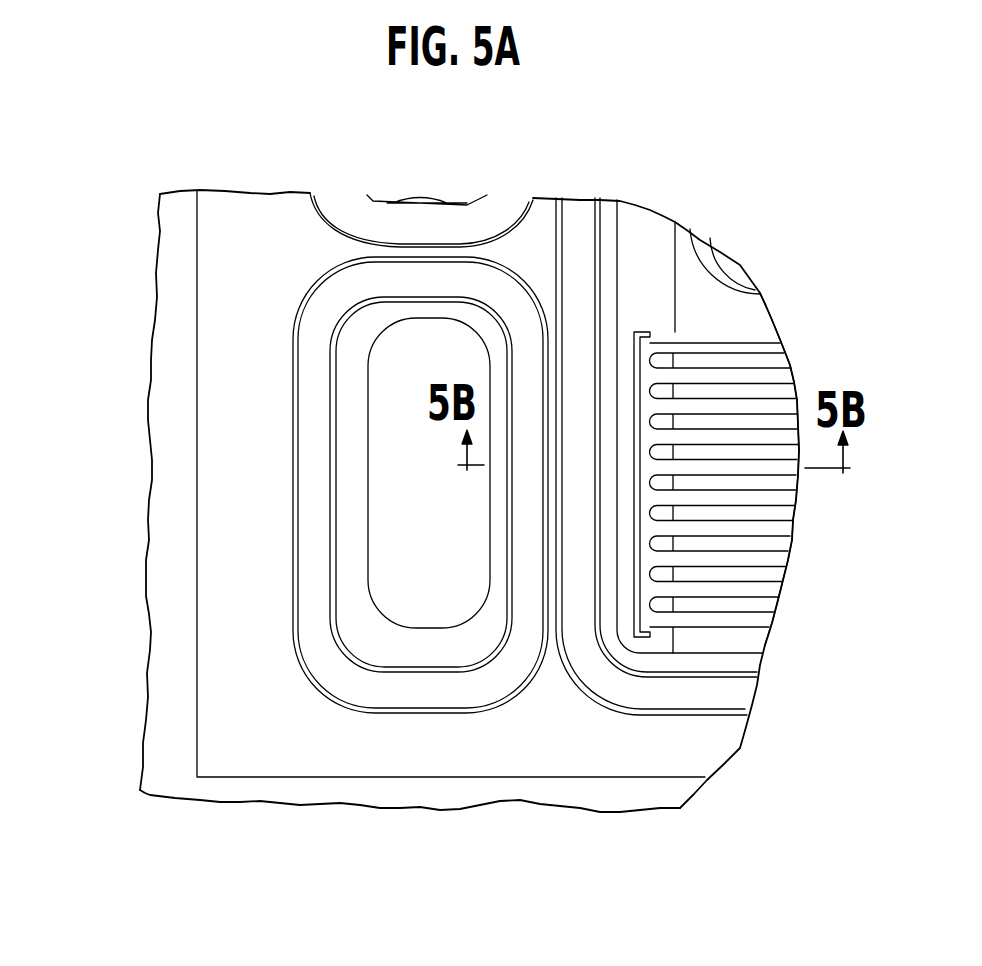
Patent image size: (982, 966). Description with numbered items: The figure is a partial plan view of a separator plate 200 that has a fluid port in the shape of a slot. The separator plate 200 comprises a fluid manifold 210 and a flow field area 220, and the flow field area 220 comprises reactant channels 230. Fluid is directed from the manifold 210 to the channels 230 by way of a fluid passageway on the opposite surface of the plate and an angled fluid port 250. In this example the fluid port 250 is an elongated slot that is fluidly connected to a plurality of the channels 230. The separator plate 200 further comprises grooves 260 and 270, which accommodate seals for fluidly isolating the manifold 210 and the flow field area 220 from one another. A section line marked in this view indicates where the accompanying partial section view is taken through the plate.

The separator plate 200 is at (212, 270).
The fluid manifold 210 is at (400, 477).
The flow field area 220 is at (802, 381).
The reactant channels 230 is at (717, 410).
The fluid port 250 is at (663, 337).
The groove 260 is at (317, 595).
The groove 270 is at (735, 697).